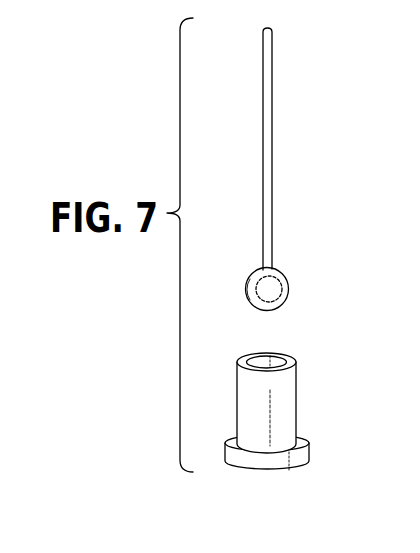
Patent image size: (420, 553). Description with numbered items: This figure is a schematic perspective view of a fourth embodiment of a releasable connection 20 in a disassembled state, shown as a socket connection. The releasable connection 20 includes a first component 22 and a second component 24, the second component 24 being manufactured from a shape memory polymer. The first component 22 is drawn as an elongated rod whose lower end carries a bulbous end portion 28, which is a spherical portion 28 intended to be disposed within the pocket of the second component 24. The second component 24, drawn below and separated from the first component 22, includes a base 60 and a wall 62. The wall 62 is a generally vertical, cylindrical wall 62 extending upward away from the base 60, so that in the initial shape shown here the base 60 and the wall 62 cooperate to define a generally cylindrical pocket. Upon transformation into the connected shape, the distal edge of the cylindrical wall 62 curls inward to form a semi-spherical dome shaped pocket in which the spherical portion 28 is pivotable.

The releasable connection 20 is at (328, 256).
The first component 22 is at (273, 138).
The bulbous end portion 28 is at (288, 295).
The wall 62 is at (297, 408).
The second component 24 is at (271, 479).
The base 60 is at (247, 472).